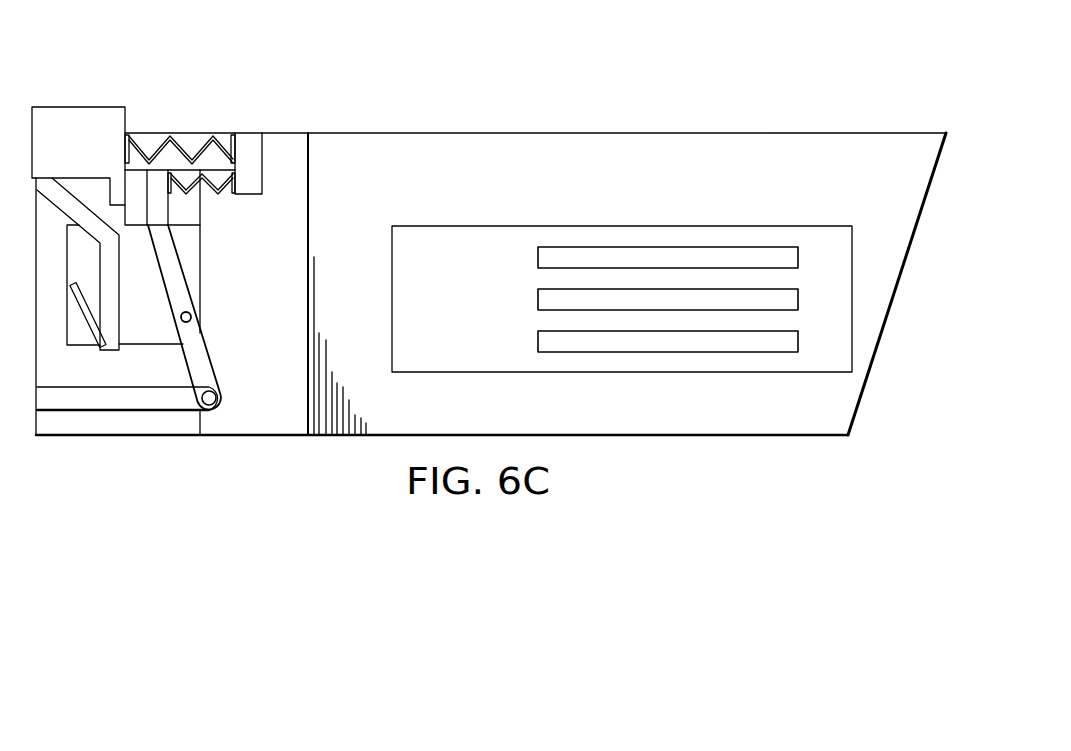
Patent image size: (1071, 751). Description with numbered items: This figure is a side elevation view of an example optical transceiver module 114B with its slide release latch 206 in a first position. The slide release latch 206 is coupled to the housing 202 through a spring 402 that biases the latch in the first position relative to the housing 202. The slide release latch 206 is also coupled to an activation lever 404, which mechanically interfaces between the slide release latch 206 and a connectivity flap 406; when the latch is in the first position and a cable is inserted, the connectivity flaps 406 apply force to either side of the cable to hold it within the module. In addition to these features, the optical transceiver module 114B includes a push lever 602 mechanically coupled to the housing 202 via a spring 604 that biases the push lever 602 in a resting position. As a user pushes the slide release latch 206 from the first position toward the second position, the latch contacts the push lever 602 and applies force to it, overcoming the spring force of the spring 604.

The optical transceiver module 114B is at (670, 60).
The housing 202 is at (281, 132).
The slide release latch 206 is at (79, 107).
The spring 402 is at (203, 132).
The activation lever 404 is at (82, 197).
The connectivity flap 406 is at (180, 356).
The push lever 602 is at (85, 412).
The spring 604 is at (217, 188).